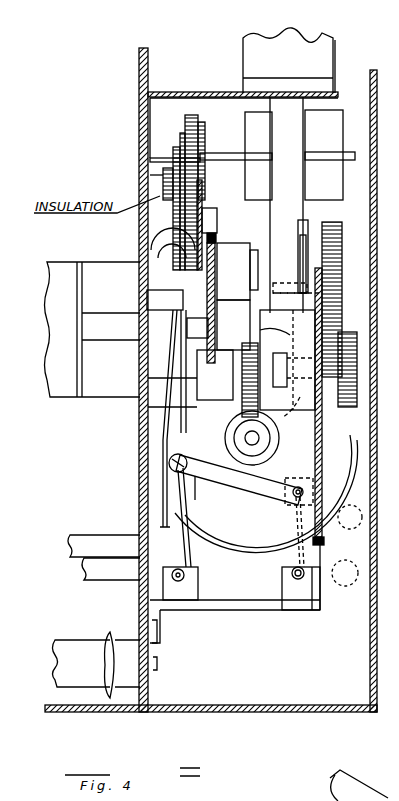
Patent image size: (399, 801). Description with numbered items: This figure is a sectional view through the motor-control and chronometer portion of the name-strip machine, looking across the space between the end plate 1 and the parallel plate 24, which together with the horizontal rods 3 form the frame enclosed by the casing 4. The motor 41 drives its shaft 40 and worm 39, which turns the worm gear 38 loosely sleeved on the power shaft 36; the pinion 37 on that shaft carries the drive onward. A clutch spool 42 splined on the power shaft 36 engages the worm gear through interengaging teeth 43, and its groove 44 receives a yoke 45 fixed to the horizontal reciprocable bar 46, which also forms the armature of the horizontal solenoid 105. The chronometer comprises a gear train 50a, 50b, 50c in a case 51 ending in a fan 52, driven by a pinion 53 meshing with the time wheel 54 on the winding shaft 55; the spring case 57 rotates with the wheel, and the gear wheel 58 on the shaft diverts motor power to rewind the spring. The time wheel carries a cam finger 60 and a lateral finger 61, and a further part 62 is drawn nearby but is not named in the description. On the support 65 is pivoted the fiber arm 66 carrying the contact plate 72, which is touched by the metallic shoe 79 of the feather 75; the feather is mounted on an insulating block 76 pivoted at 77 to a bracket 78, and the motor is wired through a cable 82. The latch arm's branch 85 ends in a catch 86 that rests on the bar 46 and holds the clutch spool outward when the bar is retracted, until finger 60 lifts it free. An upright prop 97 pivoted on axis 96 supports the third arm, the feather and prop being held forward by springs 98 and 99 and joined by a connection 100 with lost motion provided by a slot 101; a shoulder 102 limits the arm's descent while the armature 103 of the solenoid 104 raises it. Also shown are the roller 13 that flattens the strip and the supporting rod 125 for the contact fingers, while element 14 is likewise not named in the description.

The end plate 1 is at (148, 70).
The horizontal rod 3 is at (112, 576).
The casing 4 is at (370, 96).
The roller 13 is at (121, 646).
The shaft 14 is at (72, 645).
The plate 24 is at (325, 534).
The power shaft 36 is at (290, 365).
The pinion 37 is at (348, 332).
The worm gear 38 is at (287, 363).
The worm 39 is at (235, 430).
The motor shaft 40 is at (249, 440).
The motor 41 is at (252, 542).
The clutch spool 42 is at (233, 338).
The interengaging teeth 43 is at (233, 325).
The groove 44 is at (205, 378).
The yoke 45 is at (173, 357).
The reciprocable bar 46 is at (121, 333).
The gear train 50a is at (140, 193).
The gear train 50b is at (186, 130).
The gear train 50c is at (202, 126).
The case 51 is at (207, 155).
The vane or fan 52 is at (324, 155).
The pinion 53 is at (209, 205).
The time wheel 54 is at (233, 271).
The winding shaft 55 is at (285, 290).
The spring case 57 is at (262, 270).
The gear wheel 58 is at (342, 290).
The cam finger 60 is at (214, 242).
The lateral finger 61 is at (205, 350).
The block 62 is at (216, 212).
The support 65 is at (294, 261).
The arm 66 is at (300, 228).
The contact plate 72 is at (224, 303).
The feather 75 is at (163, 383).
The insulating block 76 is at (197, 497).
The pivot 77 is at (198, 576).
The bracket 78 is at (196, 608).
The metallic shoe 79 is at (166, 266).
The cable 82 is at (166, 361).
The branch 85 is at (214, 238).
The catch 86 is at (162, 240).
The axis 96 is at (286, 576).
The prop 97 is at (332, 470).
The spring 98 is at (190, 553).
The spring 99 is at (305, 556).
The connection 100 is at (235, 479).
The slot 101 is at (351, 517).
The shoulder 102 is at (334, 222).
The armature 103 is at (304, 170).
The solenoid 104 is at (289, 60).
The horizontal solenoid 105 is at (59, 262).
The supporting rod 125 is at (113, 545).